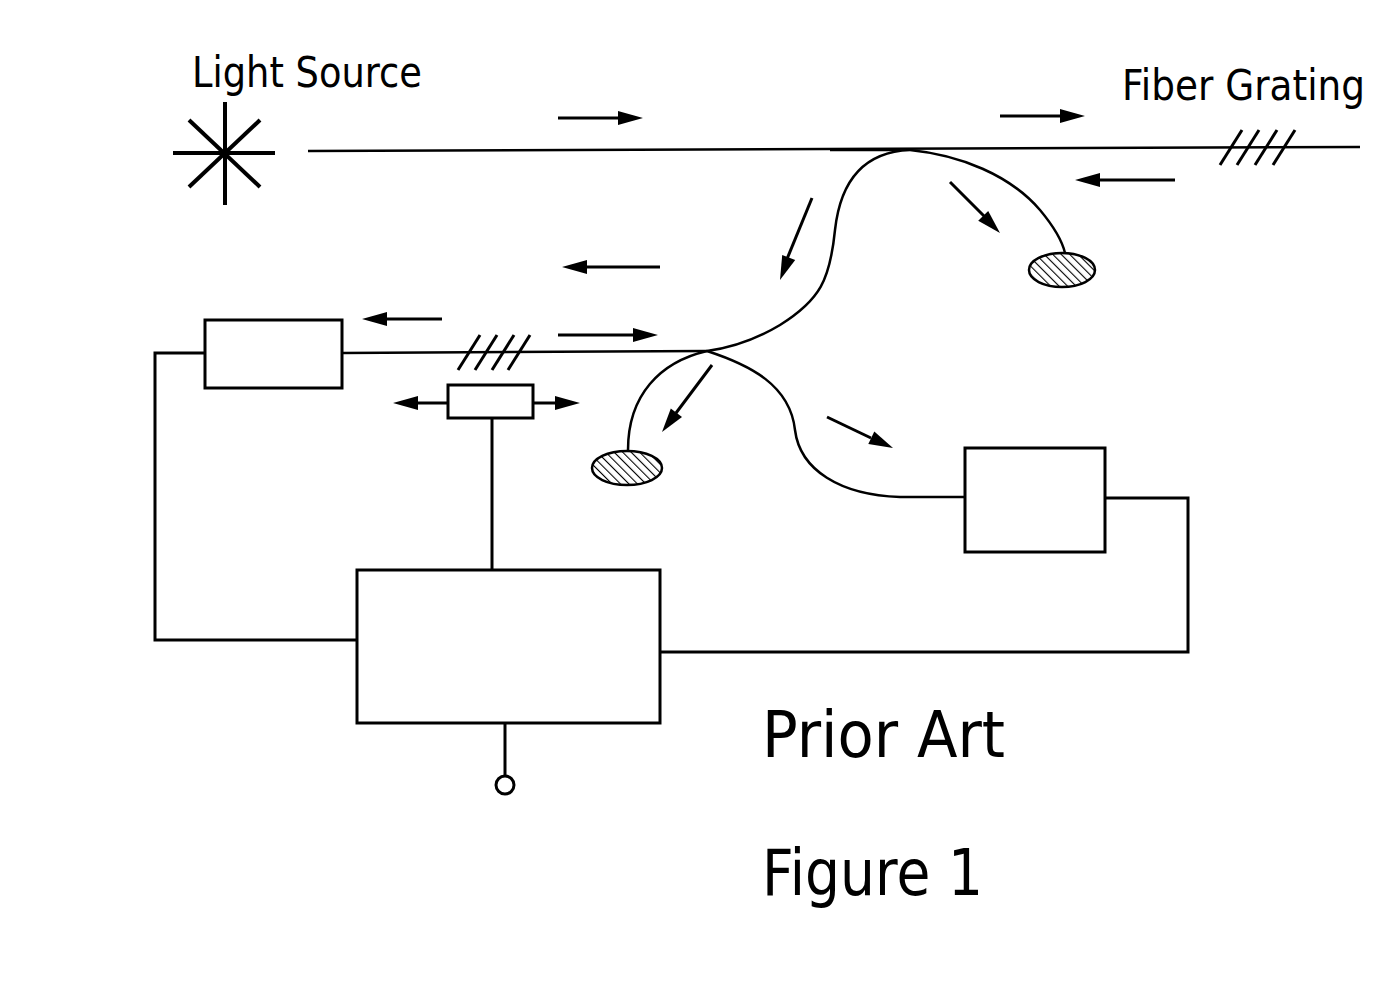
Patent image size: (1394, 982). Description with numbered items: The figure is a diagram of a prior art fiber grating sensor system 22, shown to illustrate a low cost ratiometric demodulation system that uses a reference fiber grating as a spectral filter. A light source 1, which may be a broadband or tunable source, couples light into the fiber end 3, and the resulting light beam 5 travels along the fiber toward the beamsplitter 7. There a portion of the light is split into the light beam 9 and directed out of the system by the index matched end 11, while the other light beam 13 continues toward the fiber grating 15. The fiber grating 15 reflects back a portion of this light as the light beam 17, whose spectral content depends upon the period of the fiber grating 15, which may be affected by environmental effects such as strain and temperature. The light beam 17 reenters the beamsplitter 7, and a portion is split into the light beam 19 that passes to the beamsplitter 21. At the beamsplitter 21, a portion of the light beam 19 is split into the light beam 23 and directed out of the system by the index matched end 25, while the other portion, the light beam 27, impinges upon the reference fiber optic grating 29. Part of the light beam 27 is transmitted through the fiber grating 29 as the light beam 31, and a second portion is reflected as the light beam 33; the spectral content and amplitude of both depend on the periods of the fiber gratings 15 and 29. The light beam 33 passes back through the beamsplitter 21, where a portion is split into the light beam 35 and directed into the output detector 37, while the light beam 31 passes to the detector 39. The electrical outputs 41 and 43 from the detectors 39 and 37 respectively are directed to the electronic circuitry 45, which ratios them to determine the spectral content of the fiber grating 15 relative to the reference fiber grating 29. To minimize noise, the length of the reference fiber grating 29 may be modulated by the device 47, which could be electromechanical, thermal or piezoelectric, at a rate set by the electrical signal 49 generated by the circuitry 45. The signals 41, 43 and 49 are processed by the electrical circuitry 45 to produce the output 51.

The light source 1 is at (224, 179).
The fiber end 3 is at (832, 177).
The light beam 5 is at (600, 94).
The beamsplitter 7 is at (886, 223).
The light beam 9 is at (966, 219).
The index matched end 11 is at (1062, 297).
The light beam 13 is at (1042, 84).
The fiber grating 15 is at (1257, 176).
The light beam 17 is at (1125, 204).
The light beam 19 is at (784, 237).
The beamsplitter 21 is at (653, 398).
The fiber grating sensor system 22 is at (865, 81).
The light beam 23 is at (700, 403).
The index matched end 25 is at (627, 490).
The light beam 27 is at (611, 242).
The reference fiber optic grating 29 is at (494, 325).
The light beam 31 is at (402, 296).
The light beam 33 is at (608, 311).
The light beam 35 is at (862, 414).
The output detector 37 is at (1035, 529).
The detector 39 is at (273, 381).
The electrical output 41 is at (256, 496).
The electrical output 43 is at (962, 575).
The electronic circuitry 45 is at (508, 646).
The device 47 is at (486, 426).
The electrical signal 49 is at (466, 494).
The output 51 is at (511, 787).